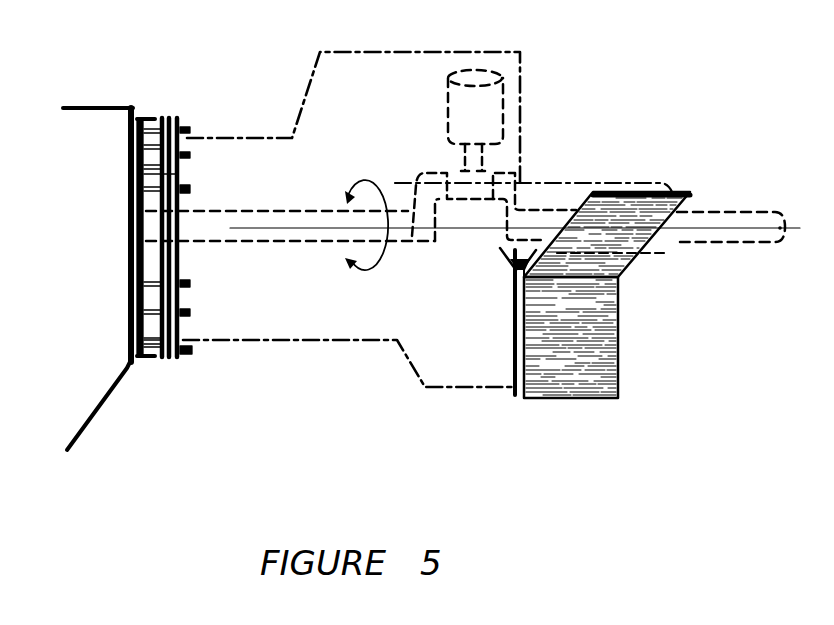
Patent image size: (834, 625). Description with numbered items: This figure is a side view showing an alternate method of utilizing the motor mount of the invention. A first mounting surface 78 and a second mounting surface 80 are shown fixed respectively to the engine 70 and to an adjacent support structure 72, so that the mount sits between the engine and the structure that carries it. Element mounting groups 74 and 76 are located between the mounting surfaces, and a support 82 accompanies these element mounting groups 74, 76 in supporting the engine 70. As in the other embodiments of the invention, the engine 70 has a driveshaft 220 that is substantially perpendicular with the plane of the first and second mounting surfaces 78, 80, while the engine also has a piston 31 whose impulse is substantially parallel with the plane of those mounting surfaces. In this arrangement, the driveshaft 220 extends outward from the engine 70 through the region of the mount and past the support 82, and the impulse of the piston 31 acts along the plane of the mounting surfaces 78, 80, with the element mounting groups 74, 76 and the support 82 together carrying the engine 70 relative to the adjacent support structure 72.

The adjacent support structure 72 is at (68, 127).
The second mounting surface 80 is at (140, 118).
The first mounting surface 78 is at (168, 118).
The element mounting group 76 is at (157, 183).
The element mounting group 74 is at (147, 355).
The engine 70 is at (487, 63).
The piston 31 is at (503, 100).
The support 82 is at (603, 370).
The driveshaft 220 is at (714, 212).